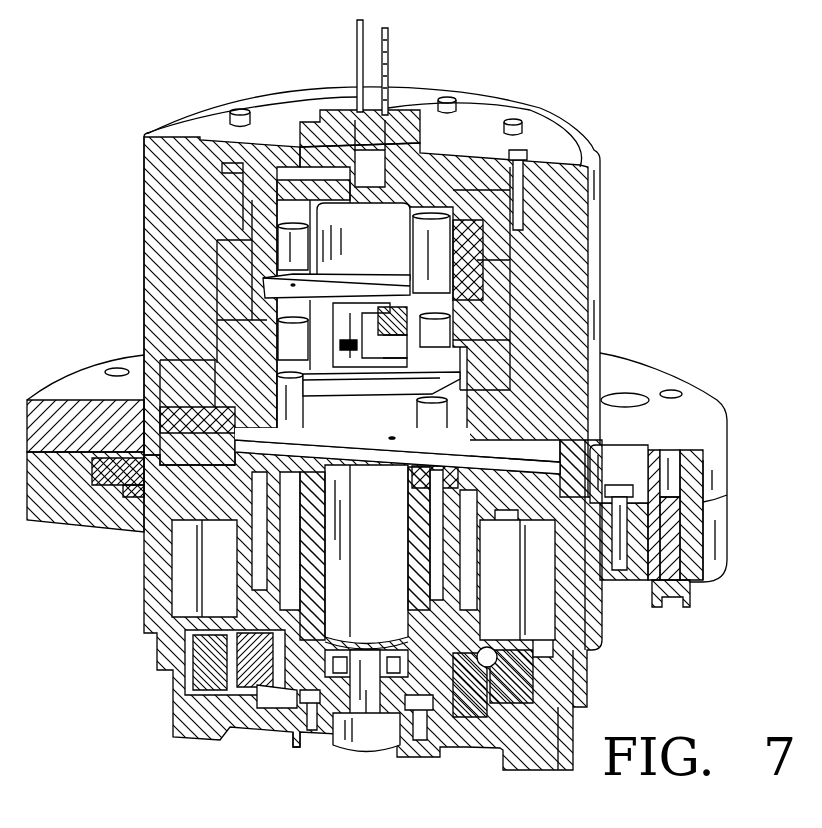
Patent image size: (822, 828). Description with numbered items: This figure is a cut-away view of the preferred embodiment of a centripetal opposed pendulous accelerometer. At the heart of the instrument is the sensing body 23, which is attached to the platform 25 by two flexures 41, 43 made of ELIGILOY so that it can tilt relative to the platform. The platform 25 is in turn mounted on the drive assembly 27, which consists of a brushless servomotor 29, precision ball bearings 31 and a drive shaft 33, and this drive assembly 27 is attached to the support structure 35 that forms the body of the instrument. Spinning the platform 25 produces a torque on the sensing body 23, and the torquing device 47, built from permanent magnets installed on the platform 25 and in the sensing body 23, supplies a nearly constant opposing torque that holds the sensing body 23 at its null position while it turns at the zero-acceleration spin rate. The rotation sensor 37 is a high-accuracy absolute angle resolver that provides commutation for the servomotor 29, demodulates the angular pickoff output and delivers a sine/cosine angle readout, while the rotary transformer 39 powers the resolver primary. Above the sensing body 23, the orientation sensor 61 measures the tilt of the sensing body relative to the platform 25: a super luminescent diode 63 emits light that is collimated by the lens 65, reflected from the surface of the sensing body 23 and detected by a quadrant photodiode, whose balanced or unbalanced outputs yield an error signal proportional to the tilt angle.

The sensing body 23 is at (350, 290).
The platform 25 is at (480, 280).
The drive assembly 27 is at (615, 651).
The brushless servomotor 29 is at (210, 567).
The precision ball bearings 31 is at (293, 563).
The drive shaft 33 is at (297, 463).
The support structure 35 is at (157, 612).
The rotation sensor 37 is at (200, 685).
The rotary transformer 39 is at (296, 752).
The flexure 41 is at (378, 366).
The flexure 43 is at (400, 318).
The torquing device 47 is at (287, 343).
The orientation sensor 61 is at (472, 128).
The super luminescent diode 63 is at (395, 110).
The lens 65 is at (277, 150).